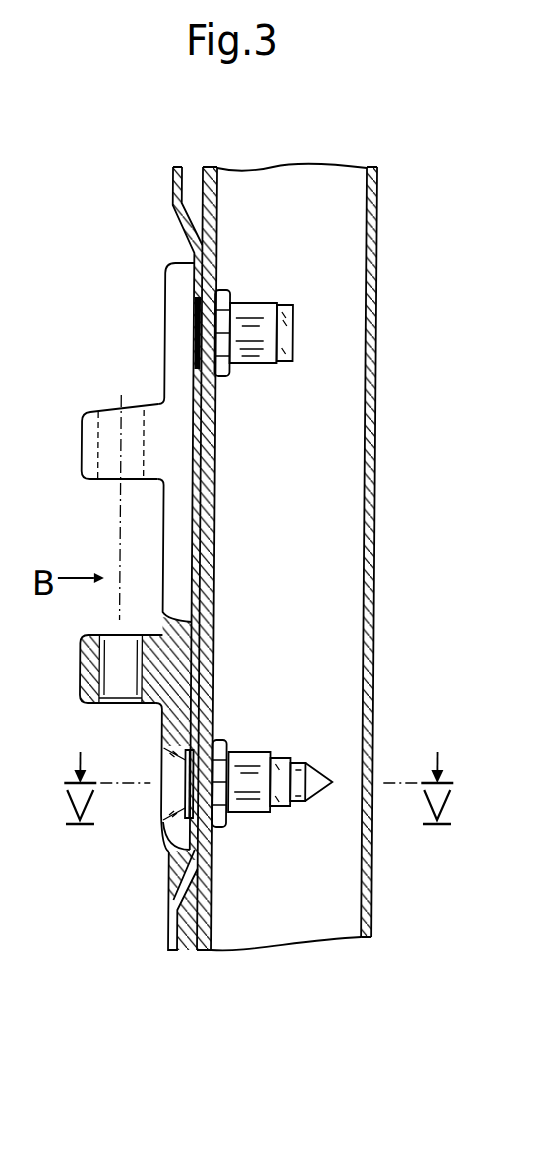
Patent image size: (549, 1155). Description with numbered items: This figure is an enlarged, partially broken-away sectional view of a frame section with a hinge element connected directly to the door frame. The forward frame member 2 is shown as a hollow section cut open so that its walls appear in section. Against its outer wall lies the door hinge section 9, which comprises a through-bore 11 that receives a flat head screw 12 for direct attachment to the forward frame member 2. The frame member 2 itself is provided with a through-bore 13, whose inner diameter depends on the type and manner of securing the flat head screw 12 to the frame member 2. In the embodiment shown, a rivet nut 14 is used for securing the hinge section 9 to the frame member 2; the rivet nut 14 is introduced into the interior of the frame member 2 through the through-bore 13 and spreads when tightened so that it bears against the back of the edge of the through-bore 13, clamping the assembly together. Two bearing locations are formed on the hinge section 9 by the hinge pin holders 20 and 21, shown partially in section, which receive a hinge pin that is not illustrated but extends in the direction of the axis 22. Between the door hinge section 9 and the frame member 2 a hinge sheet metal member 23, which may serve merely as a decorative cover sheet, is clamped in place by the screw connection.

The forward frame member 2 is at (346, 430).
The door hinge section 9 is at (180, 302).
The through-bore 11 is at (172, 829).
The flat head screw 12 is at (179, 767).
The through-bore 13 is at (198, 345).
The rivet nut 14 is at (253, 318).
The hinge pin holder 20 is at (87, 445).
The hinge pin holder 21 is at (84, 672).
The axis 22 is at (118, 555).
The hinge sheet metal member 23 is at (170, 195).